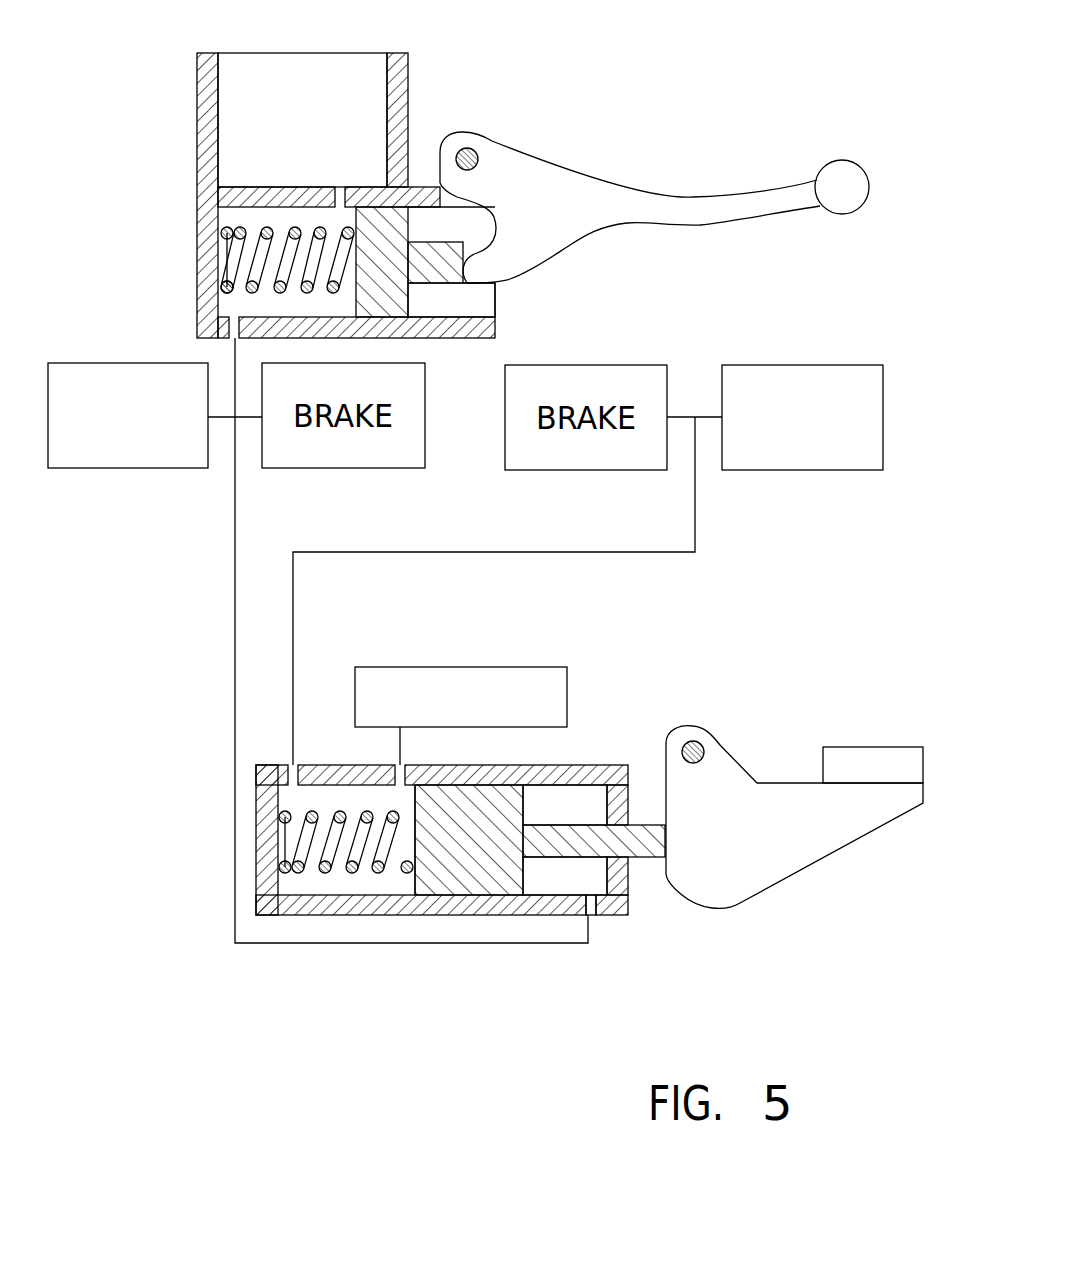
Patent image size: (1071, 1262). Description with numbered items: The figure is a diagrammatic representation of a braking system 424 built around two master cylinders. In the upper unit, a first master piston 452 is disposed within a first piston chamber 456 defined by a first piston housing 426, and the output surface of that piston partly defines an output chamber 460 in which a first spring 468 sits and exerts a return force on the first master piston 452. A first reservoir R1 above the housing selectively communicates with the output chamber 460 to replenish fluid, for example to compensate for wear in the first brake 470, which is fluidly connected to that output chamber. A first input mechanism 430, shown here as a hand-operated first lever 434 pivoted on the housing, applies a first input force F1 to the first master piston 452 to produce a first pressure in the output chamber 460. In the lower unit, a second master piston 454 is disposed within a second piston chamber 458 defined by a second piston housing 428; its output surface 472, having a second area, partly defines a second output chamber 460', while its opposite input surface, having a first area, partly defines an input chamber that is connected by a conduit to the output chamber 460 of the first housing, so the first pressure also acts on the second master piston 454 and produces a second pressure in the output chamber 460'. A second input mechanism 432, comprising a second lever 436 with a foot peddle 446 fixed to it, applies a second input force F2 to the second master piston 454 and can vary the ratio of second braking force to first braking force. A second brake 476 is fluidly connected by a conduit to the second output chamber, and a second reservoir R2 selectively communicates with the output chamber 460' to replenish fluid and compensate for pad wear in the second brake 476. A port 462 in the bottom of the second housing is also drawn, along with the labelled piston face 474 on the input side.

The braking system 424 is at (532, 859).
The first piston housing 426 is at (440, 343).
The second piston housing 428 is at (563, 767).
The first input mechanism 430 is at (654, 148).
The second input mechanism 432 is at (794, 759).
The first lever 434 is at (642, 200).
The second lever 436 is at (793, 873).
The foot peddle 446 is at (868, 755).
The first master piston 452 is at (410, 300).
The second master piston 454 is at (473, 875).
The first piston chamber 456 is at (466, 308).
The second piston chamber 458 is at (569, 805).
The output chamber 460 is at (214, 242).
The output chamber 460' is at (346, 736).
The outlet port 462 is at (573, 870).
The first spring 468 is at (228, 289).
The first brake 470 is at (107, 372).
The output surface 472 is at (417, 880).
The second piston face of area A1 474 is at (543, 883).
The second brake 476 is at (795, 380).
The first input force F1 is at (478, 262).
The second input force F2 is at (670, 845).
The first reservoir R1 is at (258, 140).
The second reservoir R2 is at (457, 665).